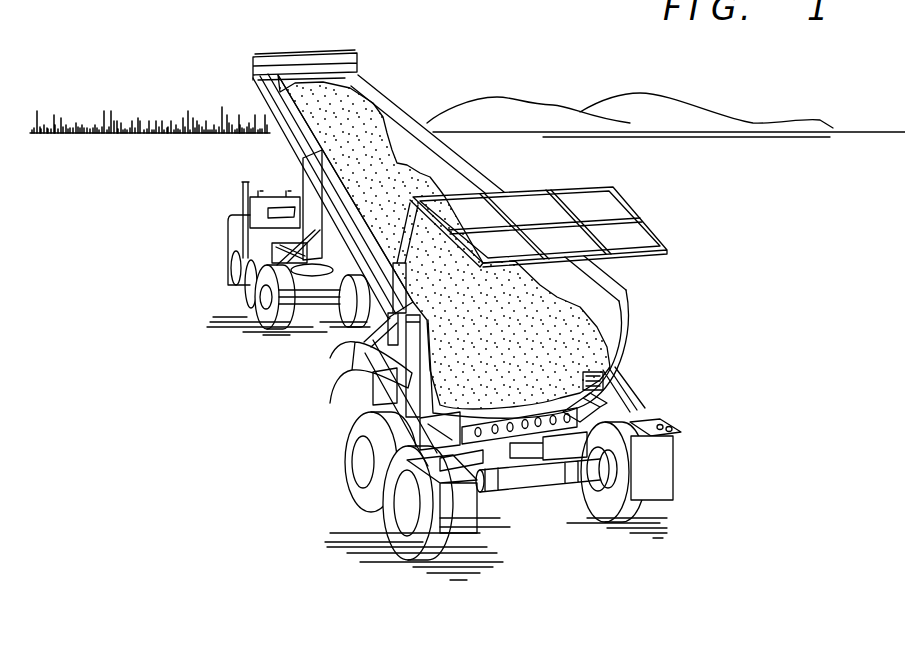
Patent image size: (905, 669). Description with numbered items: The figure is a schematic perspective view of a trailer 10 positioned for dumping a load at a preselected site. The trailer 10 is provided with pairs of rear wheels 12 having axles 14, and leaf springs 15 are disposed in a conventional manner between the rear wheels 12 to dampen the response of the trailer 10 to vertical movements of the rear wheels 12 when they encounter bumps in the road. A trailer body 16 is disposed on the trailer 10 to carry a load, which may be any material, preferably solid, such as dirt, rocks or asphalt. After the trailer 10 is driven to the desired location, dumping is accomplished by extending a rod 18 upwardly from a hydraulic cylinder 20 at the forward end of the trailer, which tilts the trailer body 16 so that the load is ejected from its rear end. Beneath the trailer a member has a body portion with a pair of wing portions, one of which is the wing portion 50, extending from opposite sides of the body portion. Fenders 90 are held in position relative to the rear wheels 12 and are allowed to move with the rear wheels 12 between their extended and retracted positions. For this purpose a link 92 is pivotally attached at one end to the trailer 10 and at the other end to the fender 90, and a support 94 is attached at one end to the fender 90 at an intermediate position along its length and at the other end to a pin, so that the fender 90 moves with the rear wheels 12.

The trailer 10 is at (668, 281).
The rear wheels 12 is at (393, 532).
The axles 14 is at (535, 487).
The leaf springs 15 is at (583, 490).
The trailer body 16 is at (490, 172).
The rod 18 is at (300, 237).
The hydraulic cylinder 20 is at (272, 253).
The wing portion 50 is at (468, 422).
The fender 90 is at (367, 387).
The link 92 is at (365, 341).
The support 94 is at (607, 410).